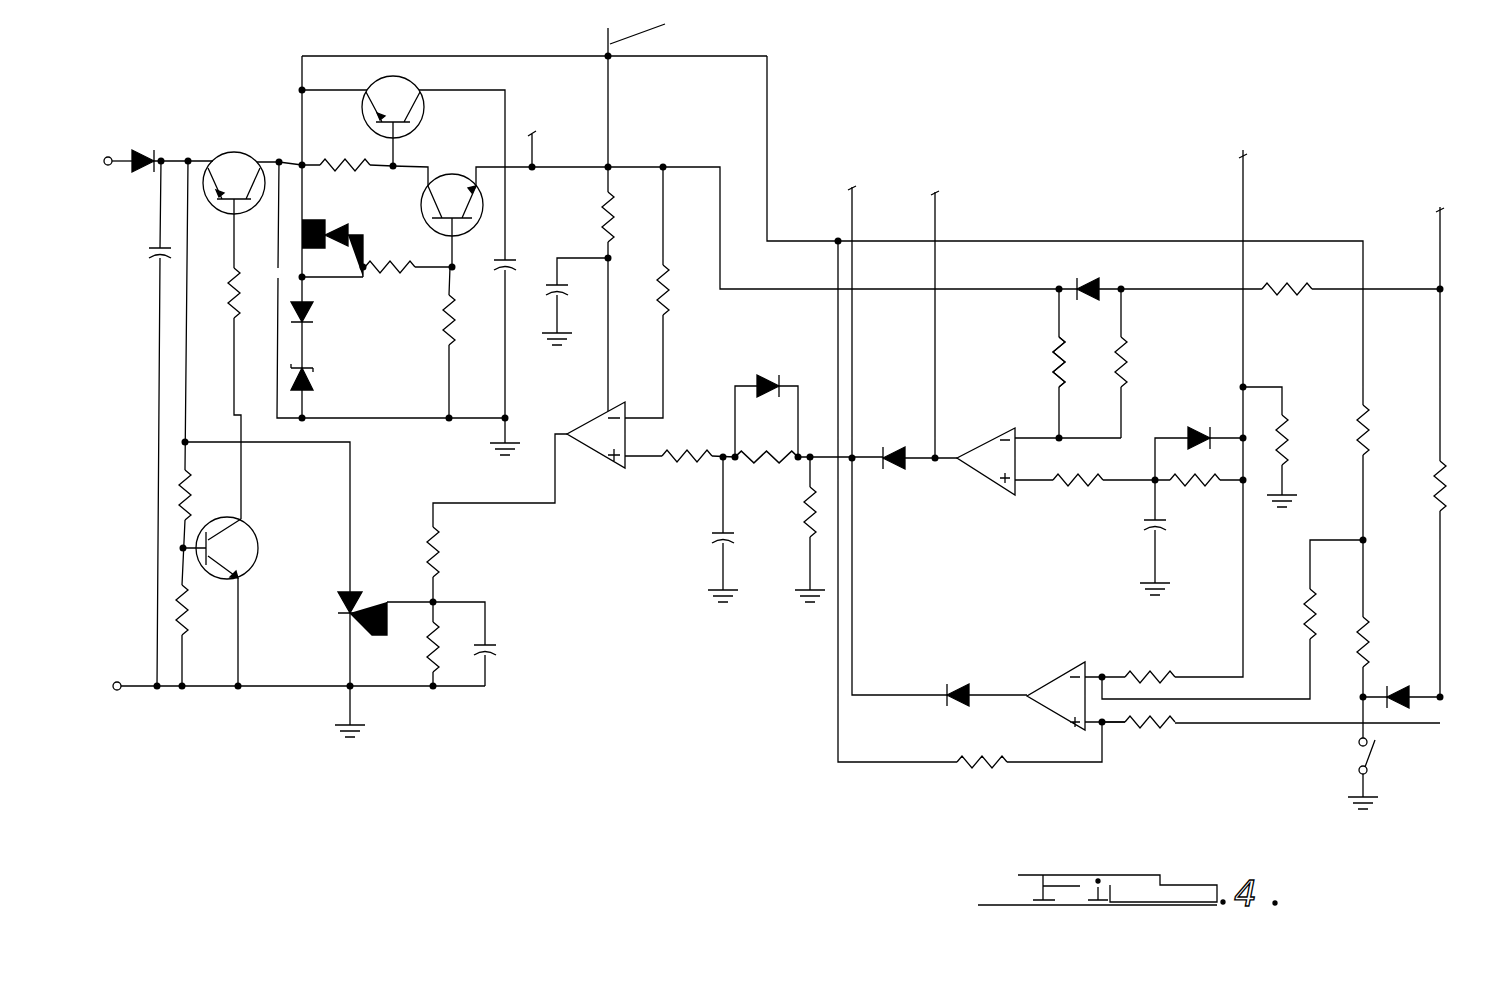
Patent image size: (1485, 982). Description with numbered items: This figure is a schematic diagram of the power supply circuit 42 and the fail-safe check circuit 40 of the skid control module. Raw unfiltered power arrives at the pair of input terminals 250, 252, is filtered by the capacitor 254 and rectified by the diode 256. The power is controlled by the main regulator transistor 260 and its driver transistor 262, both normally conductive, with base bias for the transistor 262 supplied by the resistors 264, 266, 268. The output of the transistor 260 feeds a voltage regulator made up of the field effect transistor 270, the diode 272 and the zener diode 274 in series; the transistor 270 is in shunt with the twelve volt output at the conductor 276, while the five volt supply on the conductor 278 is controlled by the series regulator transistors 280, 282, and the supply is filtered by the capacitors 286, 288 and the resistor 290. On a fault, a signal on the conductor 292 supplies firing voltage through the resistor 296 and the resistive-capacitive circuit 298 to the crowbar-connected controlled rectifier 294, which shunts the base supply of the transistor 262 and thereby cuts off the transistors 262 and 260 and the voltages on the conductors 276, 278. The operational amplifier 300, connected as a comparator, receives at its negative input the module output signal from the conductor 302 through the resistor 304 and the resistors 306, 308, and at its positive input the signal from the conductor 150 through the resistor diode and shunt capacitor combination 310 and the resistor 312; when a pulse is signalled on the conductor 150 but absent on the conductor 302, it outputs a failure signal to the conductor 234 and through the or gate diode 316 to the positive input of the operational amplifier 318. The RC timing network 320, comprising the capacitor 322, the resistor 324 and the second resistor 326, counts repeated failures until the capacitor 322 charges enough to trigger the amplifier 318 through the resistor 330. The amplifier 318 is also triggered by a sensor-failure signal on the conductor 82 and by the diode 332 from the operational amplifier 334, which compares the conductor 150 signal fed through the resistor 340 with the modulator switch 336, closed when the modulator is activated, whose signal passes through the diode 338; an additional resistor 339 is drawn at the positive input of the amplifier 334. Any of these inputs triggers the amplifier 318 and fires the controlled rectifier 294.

The input terminal 252 is at (112, 155).
The diode 256 is at (148, 156).
The main regulator transistor 260 is at (256, 130).
The capacitor 254 is at (158, 262).
The resistor 264 is at (215, 293).
The resistor 266 is at (194, 496).
The driver transistor 262 is at (246, 534).
The resistor 268 is at (190, 616).
The input terminal 250 is at (117, 690).
The field effect transistor 270 is at (360, 187).
The diode 272 is at (316, 318).
The zener diode 274 is at (312, 374).
The power supply circuit 42 is at (394, 380).
The series regulator transistor 280 is at (420, 128).
The series regulator transistor 282 is at (424, 222).
The conductor 278 is at (542, 140).
The conductor 276 is at (645, 31).
The capacitor 286 is at (504, 258).
The capacitor 288 is at (552, 300).
The resistor 290 is at (614, 230).
The controlled rectifier 294 is at (358, 590).
The resistor 296 is at (440, 576).
The conductor 292 is at (556, 510).
The resistive-capacitive circuit 298 is at (464, 702).
The operational amplifier 318 is at (600, 456).
The resistor 330 is at (682, 466).
The RC timing network 320 is at (706, 500).
The capacitor 322 is at (716, 546).
The second resistor 326 is at (790, 488).
The resistor 324 is at (796, 522).
The 'or' gate diode 316 is at (892, 470).
The operational amplifier 300 is at (982, 446).
The fail-safe check circuit 40 is at (1016, 562).
The conductor 82 is at (854, 190).
The conductor 234 is at (937, 210).
The conductor 150 is at (1245, 160).
The conductor 302 is at (1440, 216).
The resistor 308 is at (1052, 356).
The resistor 306 is at (1126, 366).
The resistor 304 is at (1292, 320).
The resistor 312 is at (1092, 502).
The resistor diode and shunt capacitor combination 310 is at (1133, 506).
The resistor 340 is at (1146, 674).
The operational amplifier 334 is at (1058, 678).
The diode 332 is at (958, 688).
The resistor 339 is at (1162, 736).
The diode 338 is at (1398, 692).
The modulator switch 336 is at (1376, 757).